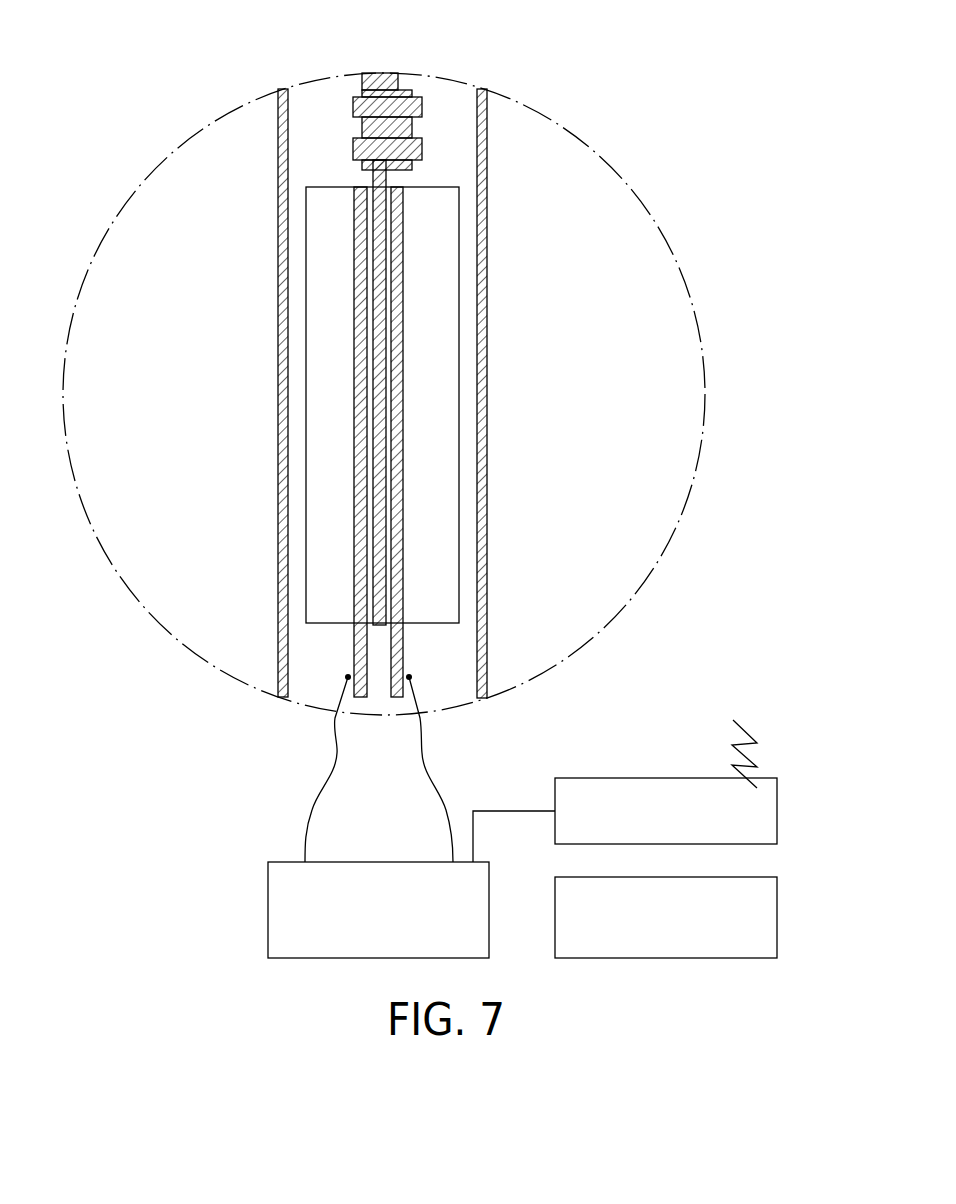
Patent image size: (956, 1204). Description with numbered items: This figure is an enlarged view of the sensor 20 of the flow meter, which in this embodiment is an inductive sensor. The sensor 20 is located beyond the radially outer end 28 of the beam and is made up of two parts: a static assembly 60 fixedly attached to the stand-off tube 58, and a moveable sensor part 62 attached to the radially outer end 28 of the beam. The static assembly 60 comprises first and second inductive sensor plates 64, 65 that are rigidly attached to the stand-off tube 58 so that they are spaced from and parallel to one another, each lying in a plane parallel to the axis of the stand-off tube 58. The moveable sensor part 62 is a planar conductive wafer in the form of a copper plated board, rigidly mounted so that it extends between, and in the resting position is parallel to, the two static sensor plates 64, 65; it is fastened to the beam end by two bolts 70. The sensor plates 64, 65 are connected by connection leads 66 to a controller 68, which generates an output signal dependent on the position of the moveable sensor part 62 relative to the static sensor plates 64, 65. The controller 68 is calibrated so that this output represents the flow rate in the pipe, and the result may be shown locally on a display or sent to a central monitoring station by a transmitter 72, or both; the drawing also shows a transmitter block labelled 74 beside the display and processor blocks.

The sensor 20 is at (442, 431).
The radially outer end of the beam 28 is at (382, 73).
The stand-off tube 58 is at (487, 340).
The static assembly 60 is at (442, 553).
The moveable sensor part 62 is at (383, 270).
The first inductive sensor plate 64 is at (403, 652).
The second inductive sensor plate 65 is at (354, 652).
The connection leads 66 is at (336, 713).
The controller 68 is at (268, 913).
The bolts 70 is at (422, 108).
The transmitter 72 is at (777, 918).
The transmitter 74 is at (777, 813).